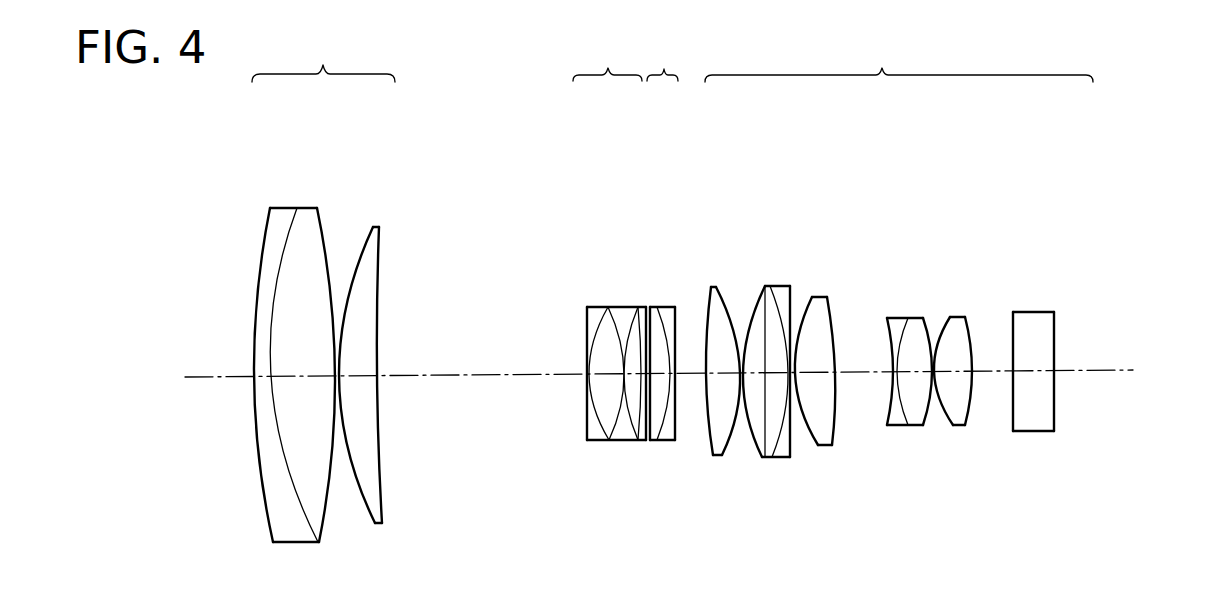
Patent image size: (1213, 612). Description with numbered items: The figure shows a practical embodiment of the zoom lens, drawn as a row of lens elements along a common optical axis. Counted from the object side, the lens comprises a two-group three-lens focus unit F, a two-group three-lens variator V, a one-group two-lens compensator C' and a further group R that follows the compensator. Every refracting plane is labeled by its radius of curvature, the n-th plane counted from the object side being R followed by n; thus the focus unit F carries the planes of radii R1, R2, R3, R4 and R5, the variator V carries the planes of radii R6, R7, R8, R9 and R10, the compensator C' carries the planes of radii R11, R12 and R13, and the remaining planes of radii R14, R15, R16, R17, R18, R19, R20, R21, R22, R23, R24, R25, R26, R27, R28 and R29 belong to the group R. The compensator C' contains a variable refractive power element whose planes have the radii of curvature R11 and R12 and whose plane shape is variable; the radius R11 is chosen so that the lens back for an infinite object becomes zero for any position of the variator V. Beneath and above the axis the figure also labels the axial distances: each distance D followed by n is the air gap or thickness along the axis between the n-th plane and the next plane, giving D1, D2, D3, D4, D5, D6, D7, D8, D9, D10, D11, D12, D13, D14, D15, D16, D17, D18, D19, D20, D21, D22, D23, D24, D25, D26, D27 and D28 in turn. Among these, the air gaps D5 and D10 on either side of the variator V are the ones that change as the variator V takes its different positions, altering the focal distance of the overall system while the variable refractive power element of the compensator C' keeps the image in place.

The focus unit F is at (323, 59).
The variator V is at (607, 58).
The compensator C' is at (662, 58).
The relay lens group R is at (899, 58).
The radius of curvature of first plane R1 is at (268, 215).
The radius of curvature of second plane R2 is at (297, 212).
The radius of curvature of third plane R3 is at (320, 220).
The radius of curvature of fourth plane R4 is at (370, 232).
The radius of curvature of fifth plane R5 is at (382, 232).
The radius of curvature of sixth plane R6 is at (585, 318).
The radius of curvature of seventh plane R7 is at (603, 316).
The radius of curvature of eighth plane R8 is at (612, 312).
The radius of curvature of ninth plane R9 is at (636, 310).
The radius of curvature of tenth plane R10 is at (648, 308).
The radius of curvature of variable refractive power element plane R11 is at (658, 308).
The radius of curvature of variable refractive power element plane R12 is at (668, 310).
The radius of curvature of thirteenth plane R13 is at (679, 312).
The radius of curvature of fourteenth plane R14 is at (710, 288).
The radius of curvature of fifteenth plane R15 is at (722, 290).
The radius of curvature of sixteenth plane R16 is at (766, 287).
The radius of curvature of seventeenth plane R17 is at (773, 290).
The radius of curvature of eighteenth plane R18 is at (789, 292).
The radius of curvature of nineteenth plane R19 is at (800, 300).
The radius of curvature of twentieth plane R20 is at (813, 298).
The radius of curvature of twenty-first plane R21 is at (830, 298).
The radius of curvature of twenty-second plane R22 is at (886, 337).
The radius of curvature of twenty-third plane R23 is at (905, 322).
The radius of curvature of twenty-fourth plane R24 is at (924, 322).
The radius of curvature of twenty-fifth plane R25 is at (951, 320).
The radius of curvature of twenty-sixth plane R26 is at (1013, 333).
The radius of curvature of twenty-seventh plane R27 is at (1055, 333).
The radius of curvature of twenty-eighth plane R28 is at (1075, 345).
The radius of curvature of twenty-ninth plane R29 is at (1100, 330).
The axial thickness or air gap D1 is at (263, 378).
The axial thickness or air gap D2 is at (293, 378).
The axial thickness or air gap D3 is at (337, 380).
The axial thickness or air gap D4 is at (362, 378).
The axial air gap D5 is at (455, 378).
The axial thickness or air gap D6 is at (588, 377).
The axial thickness or air gap D7 is at (606, 377).
The axial thickness or air gap D8 is at (632, 377).
The axial thickness or air gap D9 is at (644, 377).
The axial air gap D10 is at (649, 377).
The axial thickness or air gap D11 is at (661, 377).
The axial thickness or air gap D12 is at (673, 376).
The axial thickness or air gap D13 is at (691, 376).
The axial thickness or air gap D14 is at (724, 375).
The axial thickness or air gap D15 is at (742, 375).
The axial thickness or air gap D16 is at (755, 374).
The axial thickness or air gap D17 is at (777, 374).
The axial thickness or air gap D18 is at (789, 374).
The axial thickness or air gap D19 is at (793, 374).
The axial thickness or air gap D20 is at (815, 374).
The axial thickness or air gap D21 is at (860, 373).
The axial thickness or air gap D22 is at (896, 373).
The axial thickness or air gap D23 is at (916, 373).
The axial thickness or air gap D24 is at (934, 373).
The axial thickness or air gap D25 is at (952, 373).
The axial thickness or air gap D26 is at (992, 372).
The axial thickness or air gap D27 is at (1033, 372).
The axial thickness or air gap D28 is at (1040, 372).